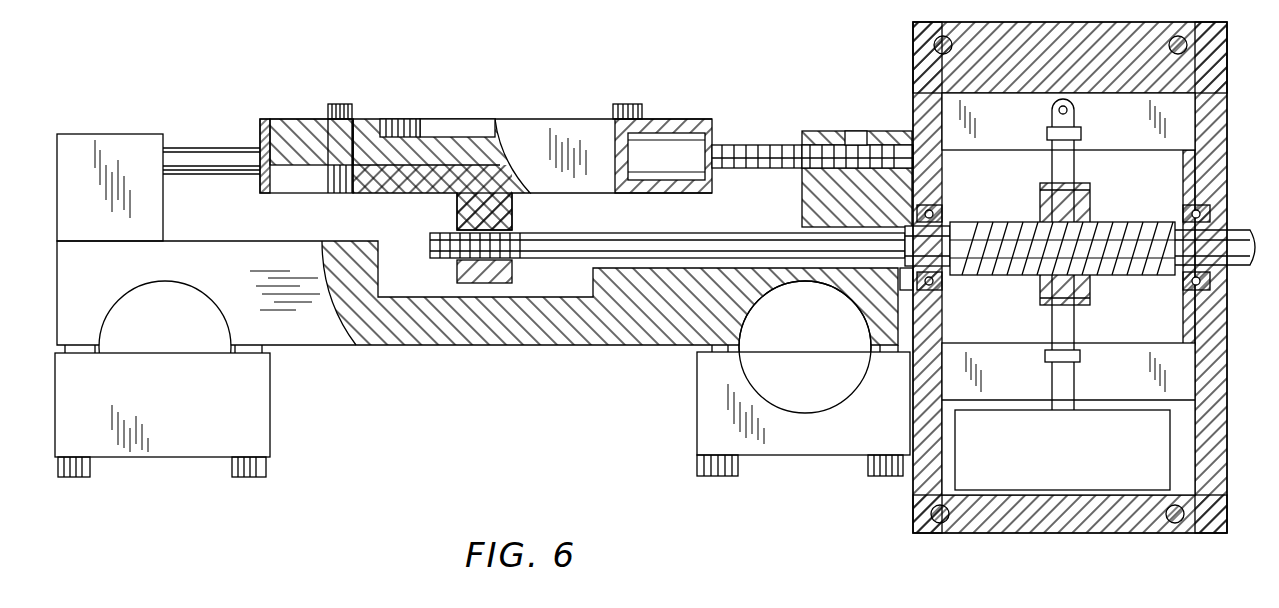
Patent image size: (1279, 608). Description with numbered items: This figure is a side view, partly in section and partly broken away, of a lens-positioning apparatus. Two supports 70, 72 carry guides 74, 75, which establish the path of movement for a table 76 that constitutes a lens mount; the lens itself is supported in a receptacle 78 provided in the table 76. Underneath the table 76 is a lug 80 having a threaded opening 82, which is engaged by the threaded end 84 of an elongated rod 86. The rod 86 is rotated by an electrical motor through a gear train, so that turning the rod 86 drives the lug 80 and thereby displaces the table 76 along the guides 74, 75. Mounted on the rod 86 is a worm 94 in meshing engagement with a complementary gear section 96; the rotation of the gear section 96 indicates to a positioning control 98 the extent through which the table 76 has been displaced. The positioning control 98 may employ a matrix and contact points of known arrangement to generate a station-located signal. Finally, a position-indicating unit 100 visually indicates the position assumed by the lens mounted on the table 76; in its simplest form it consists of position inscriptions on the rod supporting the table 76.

The support 70 is at (270, 432).
The support 72 is at (800, 455).
The guide 74 is at (75, 146).
The guide 75 is at (826, 131).
The table 76 is at (290, 119).
The receptacle 78 is at (428, 130).
The lug 80 is at (512, 213).
The threaded opening 82 is at (512, 268).
The threaded end 84 is at (530, 236).
The elongated rod 86 is at (678, 233).
The worm 94 is at (1152, 222).
The gear section 96 is at (1040, 198).
The positioning control 98 is at (1005, 480).
The position-indicating unit 100 is at (752, 136).